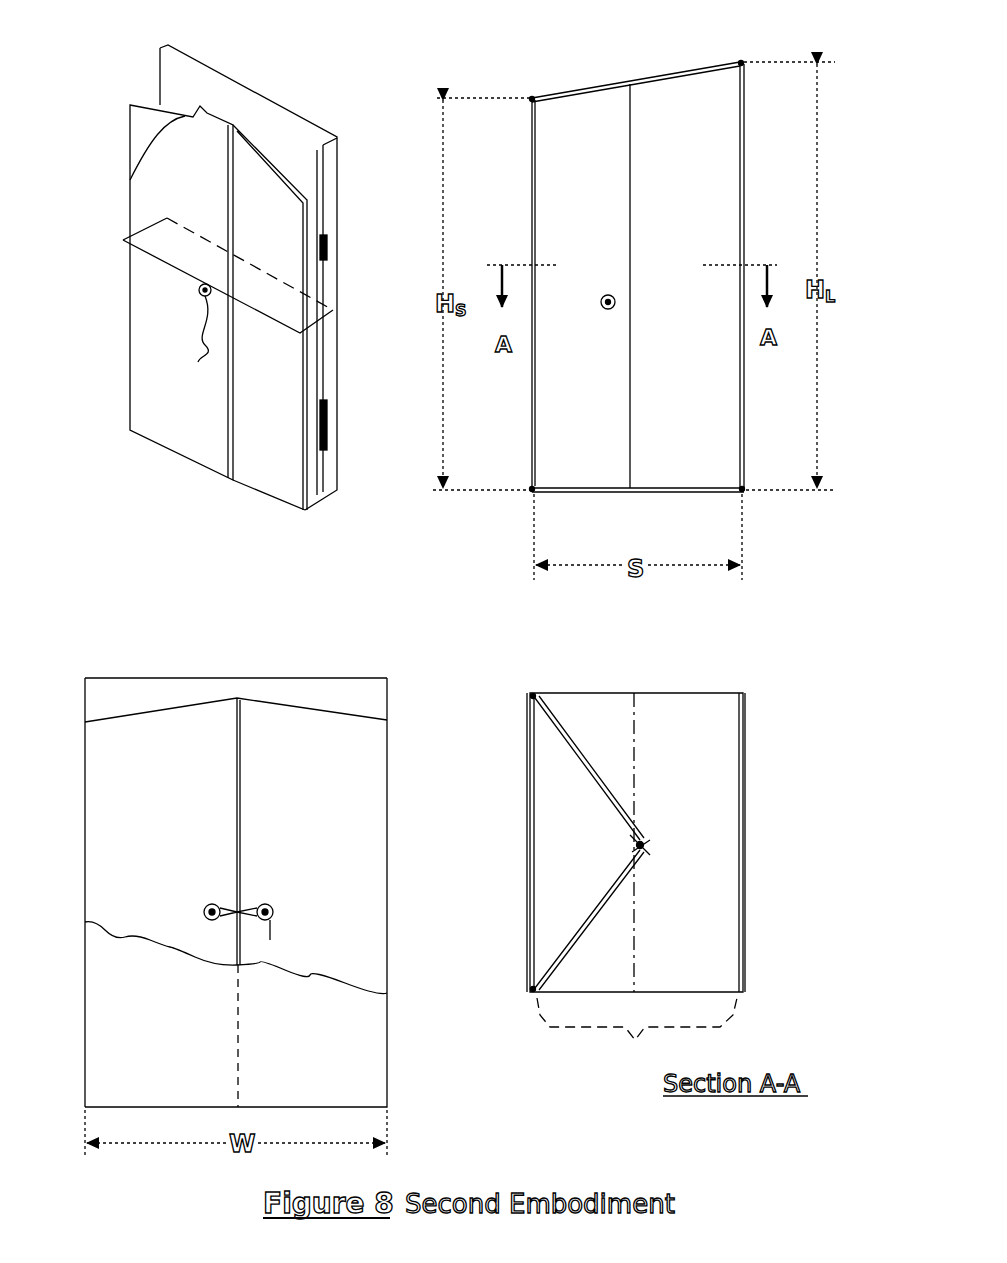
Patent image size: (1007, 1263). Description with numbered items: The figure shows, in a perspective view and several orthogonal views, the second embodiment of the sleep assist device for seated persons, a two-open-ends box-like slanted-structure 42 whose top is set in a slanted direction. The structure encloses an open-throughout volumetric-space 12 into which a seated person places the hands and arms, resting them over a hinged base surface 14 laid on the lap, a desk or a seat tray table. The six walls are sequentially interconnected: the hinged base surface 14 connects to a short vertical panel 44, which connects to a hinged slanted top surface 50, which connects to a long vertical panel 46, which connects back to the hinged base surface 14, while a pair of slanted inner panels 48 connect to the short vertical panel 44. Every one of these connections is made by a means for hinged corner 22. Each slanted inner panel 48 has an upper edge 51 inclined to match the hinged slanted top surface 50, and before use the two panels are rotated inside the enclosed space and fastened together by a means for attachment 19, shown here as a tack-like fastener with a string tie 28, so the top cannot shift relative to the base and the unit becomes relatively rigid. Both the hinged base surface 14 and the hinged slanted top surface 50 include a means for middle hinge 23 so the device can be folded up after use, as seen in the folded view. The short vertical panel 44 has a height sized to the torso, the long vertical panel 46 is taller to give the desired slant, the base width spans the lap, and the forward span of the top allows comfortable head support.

The open-throughout volumetric-space 12 is at (635, 1040).
The hinged base surface 14 is at (655, 490).
The means for attachment 19 is at (616, 302).
The means for hinged corner 22 is at (530, 97).
The means for middle hinge 23 is at (637, 918).
The string tie 28 is at (180, 272).
The two-open-ends box-like slanted-structure 42 is at (130, 75).
The short vertical panel 44 is at (530, 222).
The long vertical panel 46 is at (335, 348).
The slanted inner panel 48 is at (185, 405).
The hinged slanted top surface 50 is at (645, 77).
The upper edge 51 is at (262, 162).